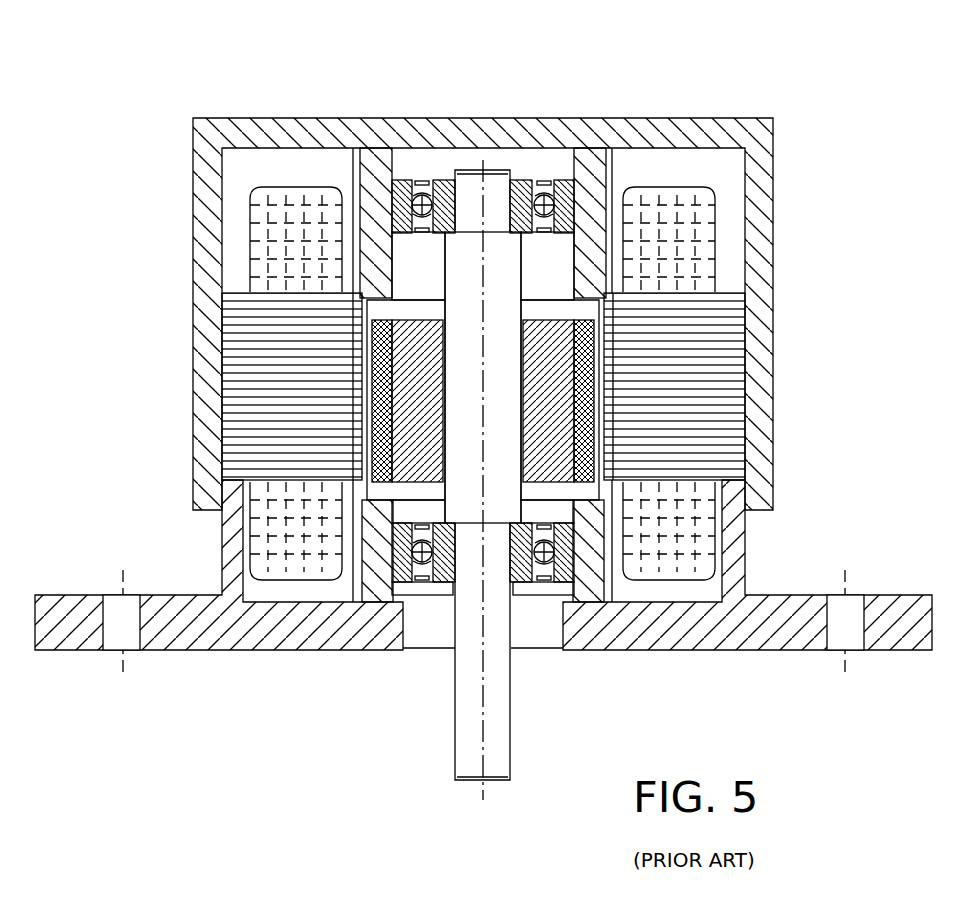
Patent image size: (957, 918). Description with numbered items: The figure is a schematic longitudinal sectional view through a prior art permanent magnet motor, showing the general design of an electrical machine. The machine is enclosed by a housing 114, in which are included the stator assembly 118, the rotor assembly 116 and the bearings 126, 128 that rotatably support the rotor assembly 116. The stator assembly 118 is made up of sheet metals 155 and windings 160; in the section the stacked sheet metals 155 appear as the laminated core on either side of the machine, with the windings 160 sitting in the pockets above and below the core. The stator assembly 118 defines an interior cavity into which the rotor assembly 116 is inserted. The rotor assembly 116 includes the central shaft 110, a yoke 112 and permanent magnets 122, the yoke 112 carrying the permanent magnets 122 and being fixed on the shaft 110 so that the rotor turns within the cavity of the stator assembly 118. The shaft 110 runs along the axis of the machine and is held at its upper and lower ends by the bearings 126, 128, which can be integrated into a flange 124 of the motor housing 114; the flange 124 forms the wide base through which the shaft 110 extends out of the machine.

The shaft 110 is at (502, 735).
The yoke 112 is at (592, 449).
The housing 114 is at (652, 133).
The rotor assembly 116 is at (377, 130).
The stator assembly 118 is at (278, 165).
The permanent magnets 122 is at (598, 386).
The flange 124 is at (263, 650).
The bearing 126 is at (538, 178).
The bearing 128 is at (547, 582).
The sheet metals 155 is at (703, 318).
The windings 160 is at (705, 233).